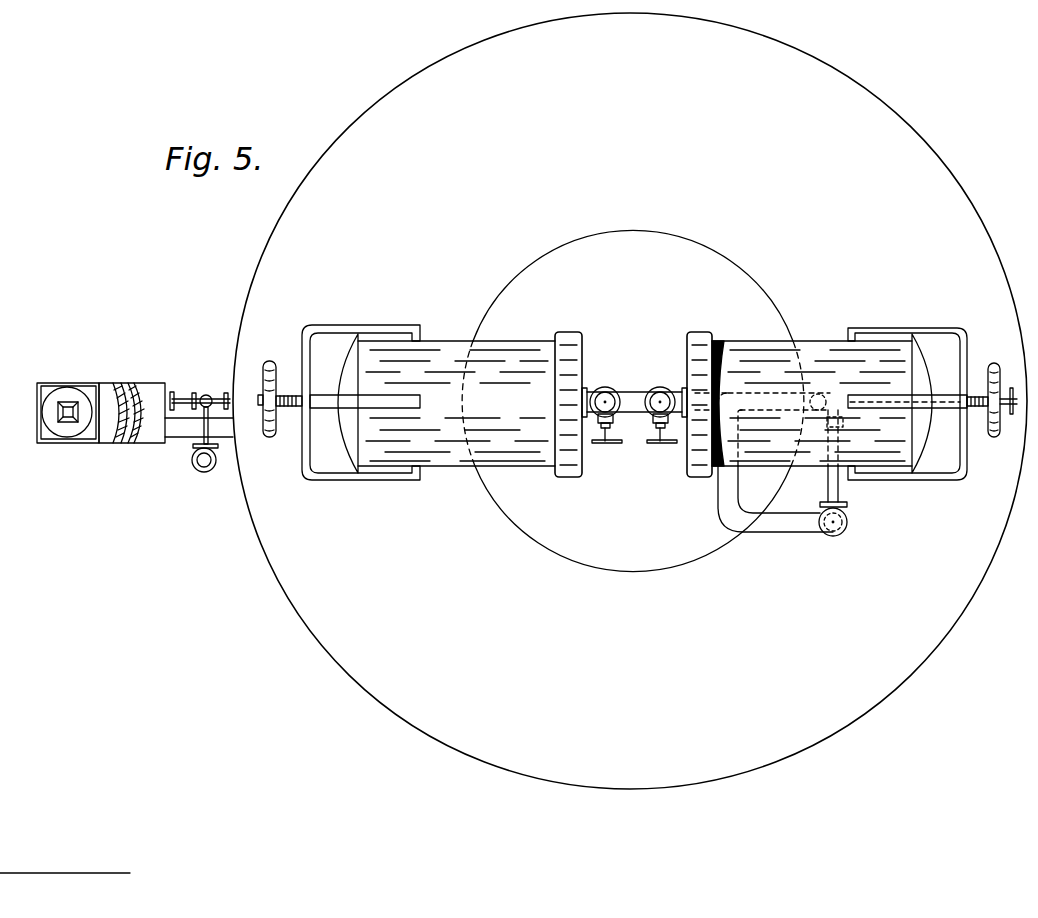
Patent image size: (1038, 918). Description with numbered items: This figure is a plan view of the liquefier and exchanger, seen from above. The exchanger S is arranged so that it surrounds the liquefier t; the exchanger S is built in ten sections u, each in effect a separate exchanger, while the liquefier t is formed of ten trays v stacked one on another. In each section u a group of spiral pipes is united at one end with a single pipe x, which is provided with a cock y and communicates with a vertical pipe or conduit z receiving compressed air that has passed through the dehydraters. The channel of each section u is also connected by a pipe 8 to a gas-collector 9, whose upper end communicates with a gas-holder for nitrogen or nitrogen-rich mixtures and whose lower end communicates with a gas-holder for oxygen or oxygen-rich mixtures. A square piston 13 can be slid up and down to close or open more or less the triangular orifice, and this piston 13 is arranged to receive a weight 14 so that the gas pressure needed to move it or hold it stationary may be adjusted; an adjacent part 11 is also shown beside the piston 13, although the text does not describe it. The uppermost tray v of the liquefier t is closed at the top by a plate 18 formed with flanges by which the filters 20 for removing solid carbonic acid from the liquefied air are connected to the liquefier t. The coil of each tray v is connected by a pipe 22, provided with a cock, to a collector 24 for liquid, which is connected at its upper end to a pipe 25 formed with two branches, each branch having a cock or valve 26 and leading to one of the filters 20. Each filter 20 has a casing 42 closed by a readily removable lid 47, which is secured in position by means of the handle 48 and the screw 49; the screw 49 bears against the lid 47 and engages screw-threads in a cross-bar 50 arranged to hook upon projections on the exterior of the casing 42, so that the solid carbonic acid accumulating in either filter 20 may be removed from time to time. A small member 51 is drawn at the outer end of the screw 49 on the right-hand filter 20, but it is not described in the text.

The pipe 8 is at (199, 429).
The gas-collector 9 is at (122, 385).
The lens 11 is at (115, 413).
The square piston 13 is at (50, 385).
The weight 14 is at (58, 412).
The plate 18 is at (633, 400).
The filter 20 is at (635, 399).
The pipe 22 is at (806, 403).
The collector for liquid 24 is at (848, 524).
The pipe 25 is at (710, 463).
The cock or valve 26 is at (612, 416).
The casing 42 is at (635, 405).
The lid 47 is at (634, 402).
The handle 48 is at (268, 410).
The screw 49 is at (974, 418).
The cross-bar 50 is at (638, 364).
The disc 51 is at (1006, 400).
The single pipe x is at (226, 393).
The cock y is at (205, 396).
The vertical pipe or conduit z is at (192, 460).
The exchanger S is at (630, 401).
The section u is at (632, 407).
The liquefier t is at (618, 405).
The tray v is at (670, 492).